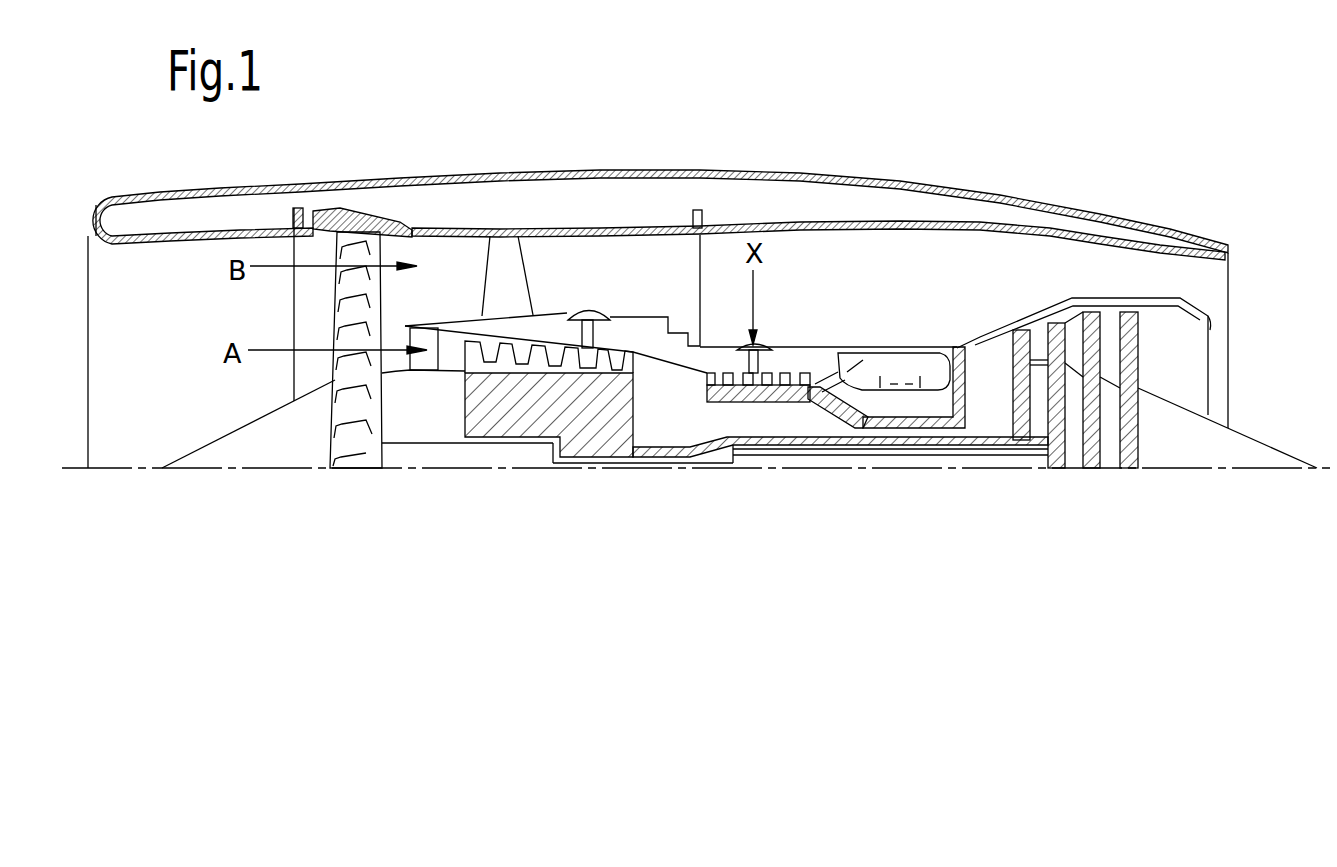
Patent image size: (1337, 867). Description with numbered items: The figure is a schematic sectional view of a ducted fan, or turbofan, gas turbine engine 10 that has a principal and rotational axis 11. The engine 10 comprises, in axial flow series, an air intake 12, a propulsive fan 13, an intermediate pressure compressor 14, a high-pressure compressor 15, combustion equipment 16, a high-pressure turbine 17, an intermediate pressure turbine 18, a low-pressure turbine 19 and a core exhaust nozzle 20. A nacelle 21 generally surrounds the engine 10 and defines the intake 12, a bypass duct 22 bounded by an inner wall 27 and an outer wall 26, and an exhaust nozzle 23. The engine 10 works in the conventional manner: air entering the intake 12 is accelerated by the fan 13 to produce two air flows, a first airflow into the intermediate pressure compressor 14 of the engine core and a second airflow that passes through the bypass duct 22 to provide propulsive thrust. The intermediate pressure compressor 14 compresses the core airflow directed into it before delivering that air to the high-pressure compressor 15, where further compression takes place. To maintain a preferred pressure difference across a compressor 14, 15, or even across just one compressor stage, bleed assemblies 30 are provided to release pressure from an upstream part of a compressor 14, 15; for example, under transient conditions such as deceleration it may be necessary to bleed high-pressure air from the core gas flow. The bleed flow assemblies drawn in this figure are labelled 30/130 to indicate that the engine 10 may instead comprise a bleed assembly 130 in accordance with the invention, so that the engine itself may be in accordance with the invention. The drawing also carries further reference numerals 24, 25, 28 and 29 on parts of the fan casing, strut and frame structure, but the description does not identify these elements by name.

The gas turbine engine 10 is at (205, 490).
The principal and rotational axis 11 is at (1272, 478).
The air intake 12 is at (117, 243).
The propulsive fan 13 is at (335, 296).
The intermediate pressure compressor 14 is at (467, 353).
The high-pressure compressor 15 is at (640, 377).
The combustion equipment 16 is at (866, 357).
The high-pressure turbine 17 is at (980, 343).
The intermediate pressure turbine 18 is at (1043, 312).
The low-pressure turbine 19 is at (1129, 340).
The core exhaust nozzle 20 is at (1200, 310).
The nacelle 21 is at (160, 197).
The bypass duct 22 is at (451, 298).
The exhaust nozzle 23 is at (1210, 247).
The fan casing 24 is at (380, 213).
The fan casing flange 25 is at (353, 210).
The outer wall 26 is at (538, 227).
The inner wall 27 is at (833, 347).
The strut 28 is at (503, 243).
The structural frame 29 is at (630, 488).
The bleed assembly 30 is at (702, 306).
The bleed assembly 130 is at (587, 307).